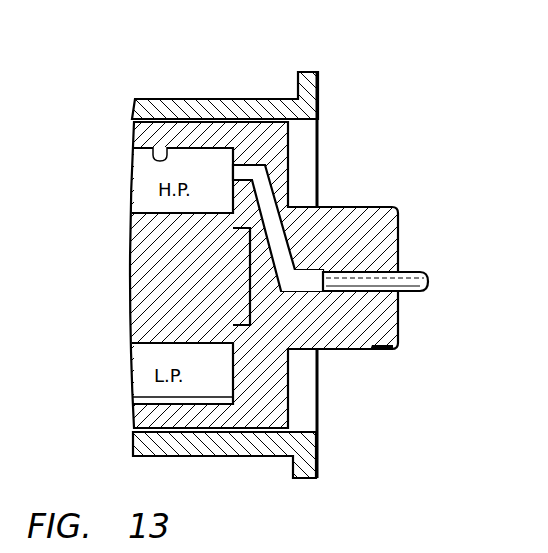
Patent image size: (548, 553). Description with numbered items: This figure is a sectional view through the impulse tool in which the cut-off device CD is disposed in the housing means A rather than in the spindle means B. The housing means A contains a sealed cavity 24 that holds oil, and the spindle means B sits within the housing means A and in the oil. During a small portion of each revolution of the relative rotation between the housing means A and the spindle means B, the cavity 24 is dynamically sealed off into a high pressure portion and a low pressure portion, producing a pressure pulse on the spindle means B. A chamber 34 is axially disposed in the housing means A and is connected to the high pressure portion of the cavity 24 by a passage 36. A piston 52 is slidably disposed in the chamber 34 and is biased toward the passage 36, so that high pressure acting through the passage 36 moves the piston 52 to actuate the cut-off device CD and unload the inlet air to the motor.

The cavity 24 is at (152, 150).
The housing means A is at (227, 100).
The spindle means B is at (196, 420).
The passage 36 is at (262, 197).
The chamber 34 is at (307, 282).
The piston 52 is at (413, 280).
The cut-off device CD is at (295, 307).